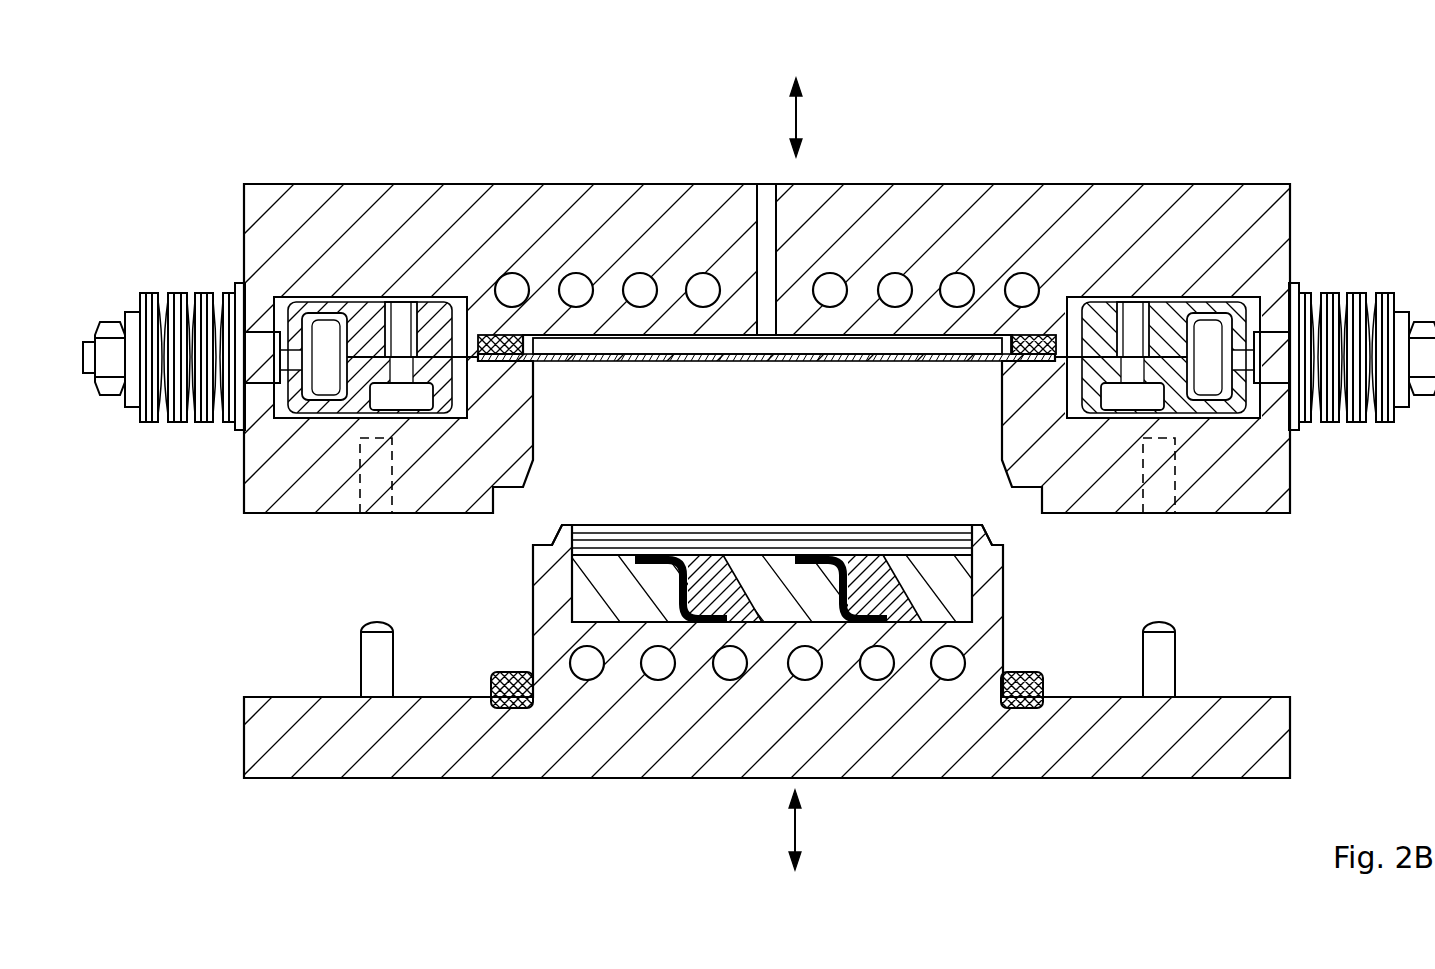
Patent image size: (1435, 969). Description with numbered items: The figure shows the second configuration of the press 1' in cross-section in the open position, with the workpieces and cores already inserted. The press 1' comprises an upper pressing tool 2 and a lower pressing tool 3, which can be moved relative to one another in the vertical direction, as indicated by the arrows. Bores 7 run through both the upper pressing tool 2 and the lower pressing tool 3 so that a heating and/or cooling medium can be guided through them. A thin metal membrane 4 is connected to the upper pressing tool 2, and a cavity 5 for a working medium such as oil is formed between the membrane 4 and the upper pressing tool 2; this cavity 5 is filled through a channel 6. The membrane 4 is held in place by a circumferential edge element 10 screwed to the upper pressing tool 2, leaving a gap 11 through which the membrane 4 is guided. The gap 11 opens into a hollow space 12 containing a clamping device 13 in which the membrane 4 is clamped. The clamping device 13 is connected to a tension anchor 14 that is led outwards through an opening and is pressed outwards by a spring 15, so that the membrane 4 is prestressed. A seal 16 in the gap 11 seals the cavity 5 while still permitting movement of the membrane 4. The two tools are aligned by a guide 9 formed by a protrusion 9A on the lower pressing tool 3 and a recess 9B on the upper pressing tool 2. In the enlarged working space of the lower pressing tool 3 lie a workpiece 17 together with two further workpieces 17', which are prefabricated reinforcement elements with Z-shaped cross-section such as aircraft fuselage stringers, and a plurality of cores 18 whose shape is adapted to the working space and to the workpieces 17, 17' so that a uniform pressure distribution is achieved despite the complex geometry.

The press 1' is at (481, 474).
The upper pressing tool 2 is at (1243, 196).
The lower pressing tool 3 is at (1268, 747).
The membrane 4 is at (630, 358).
The cavity 5 is at (786, 345).
The channel 6 is at (767, 192).
The bores 7 is at (955, 288).
The guide 9 is at (1302, 572).
The protrusion 9A is at (1160, 655).
The recess 9B is at (1160, 478).
The edge element 10 is at (1270, 468).
The gap 11 is at (1030, 365).
The hollow space 12 is at (1078, 305).
The clamping device 13 is at (1169, 300).
The tension anchor 14 is at (1290, 250).
The spring 15 is at (1352, 298).
The seal 16 is at (1040, 330).
The workpiece 17 is at (772, 508).
The further workpieces 17' is at (758, 540).
The cores 18 is at (602, 558).